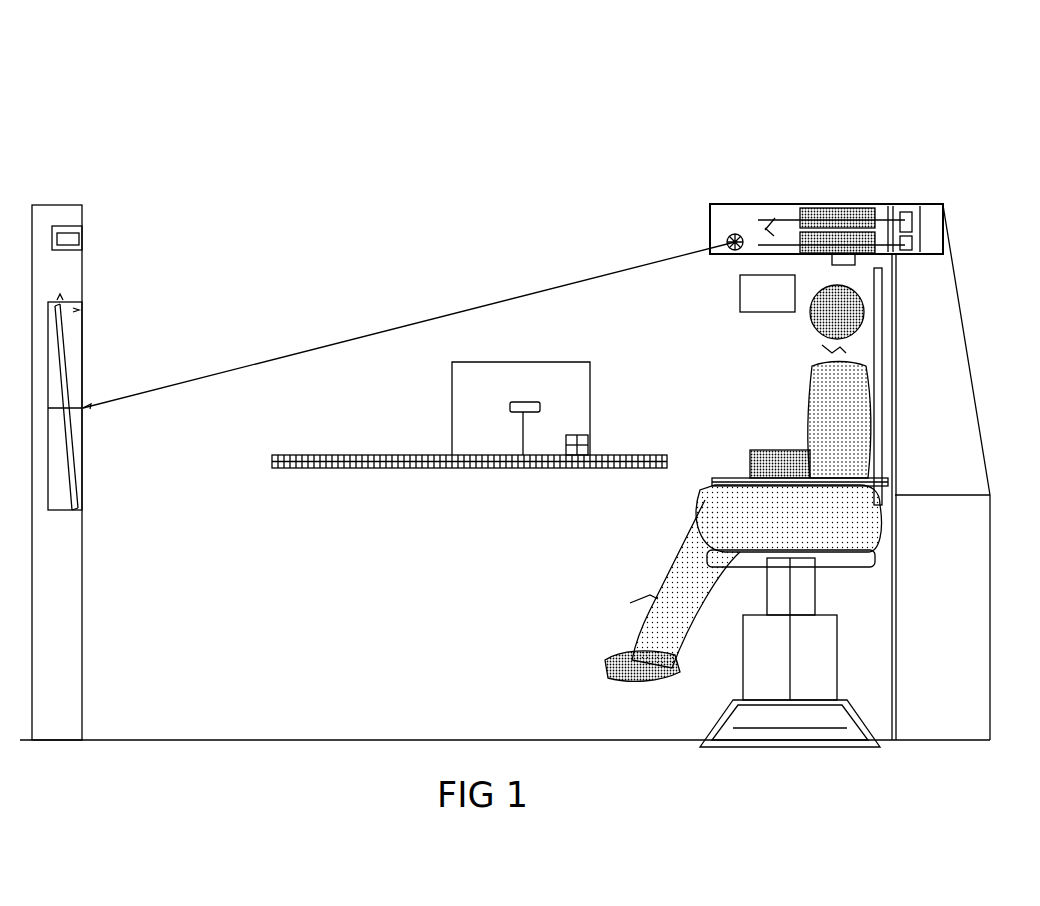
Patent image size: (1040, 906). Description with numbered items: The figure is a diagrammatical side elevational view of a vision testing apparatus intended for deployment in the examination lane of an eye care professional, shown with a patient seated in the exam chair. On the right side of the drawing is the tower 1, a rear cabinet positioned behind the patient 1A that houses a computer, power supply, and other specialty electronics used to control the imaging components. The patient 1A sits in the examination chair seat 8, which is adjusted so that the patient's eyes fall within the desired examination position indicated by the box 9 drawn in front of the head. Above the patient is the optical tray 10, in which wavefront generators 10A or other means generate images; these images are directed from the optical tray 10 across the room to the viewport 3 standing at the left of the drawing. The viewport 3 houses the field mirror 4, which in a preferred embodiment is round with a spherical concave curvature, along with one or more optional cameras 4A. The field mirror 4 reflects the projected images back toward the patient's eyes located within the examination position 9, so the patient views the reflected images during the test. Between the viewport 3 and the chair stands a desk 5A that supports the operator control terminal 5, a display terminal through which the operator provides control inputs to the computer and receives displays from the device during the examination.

The tower 1 is at (880, 347).
The patient 1A is at (758, 367).
The viewport 3 is at (57, 447).
The field mirror 4 is at (87, 330).
The cameras 4A is at (107, 222).
The operator control terminal 5 is at (515, 404).
The desk 5A is at (469, 424).
The examination chair seat 8 is at (807, 510).
The desired examination position 9 is at (732, 275).
The optical tray 10 is at (741, 204).
The wavefront generators 10A is at (840, 210).